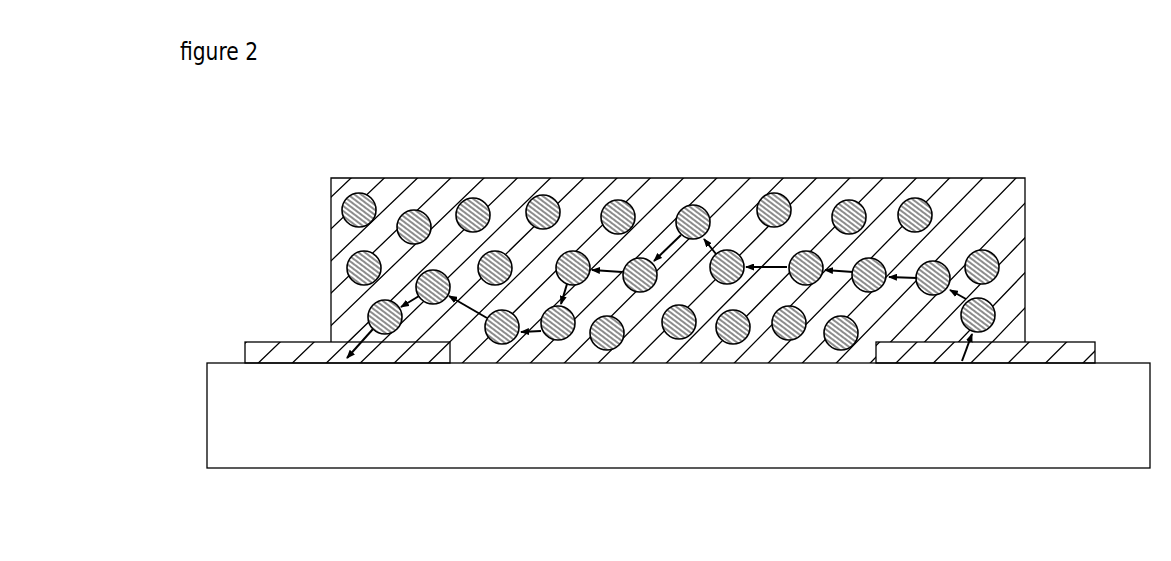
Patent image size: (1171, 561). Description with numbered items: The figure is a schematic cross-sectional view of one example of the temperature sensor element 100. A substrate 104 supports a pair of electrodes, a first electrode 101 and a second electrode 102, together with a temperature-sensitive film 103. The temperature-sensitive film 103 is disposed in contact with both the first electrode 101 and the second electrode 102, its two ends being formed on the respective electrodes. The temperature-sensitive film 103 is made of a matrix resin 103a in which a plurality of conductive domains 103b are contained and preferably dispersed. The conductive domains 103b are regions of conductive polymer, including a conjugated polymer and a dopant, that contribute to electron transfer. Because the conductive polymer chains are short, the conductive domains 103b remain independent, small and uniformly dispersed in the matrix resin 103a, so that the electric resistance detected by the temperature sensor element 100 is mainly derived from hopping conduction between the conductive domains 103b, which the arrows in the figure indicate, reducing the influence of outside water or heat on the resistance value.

The temperature sensor element 100 is at (992, 131).
The first electrode 101 is at (1057, 366).
The second electrode 102 is at (273, 364).
The temperature-sensitive film 103 is at (653, 270).
The matrix resin 103a is at (1027, 204).
The conductive domains 103b is at (995, 256).
The substrate 104 is at (1128, 371).